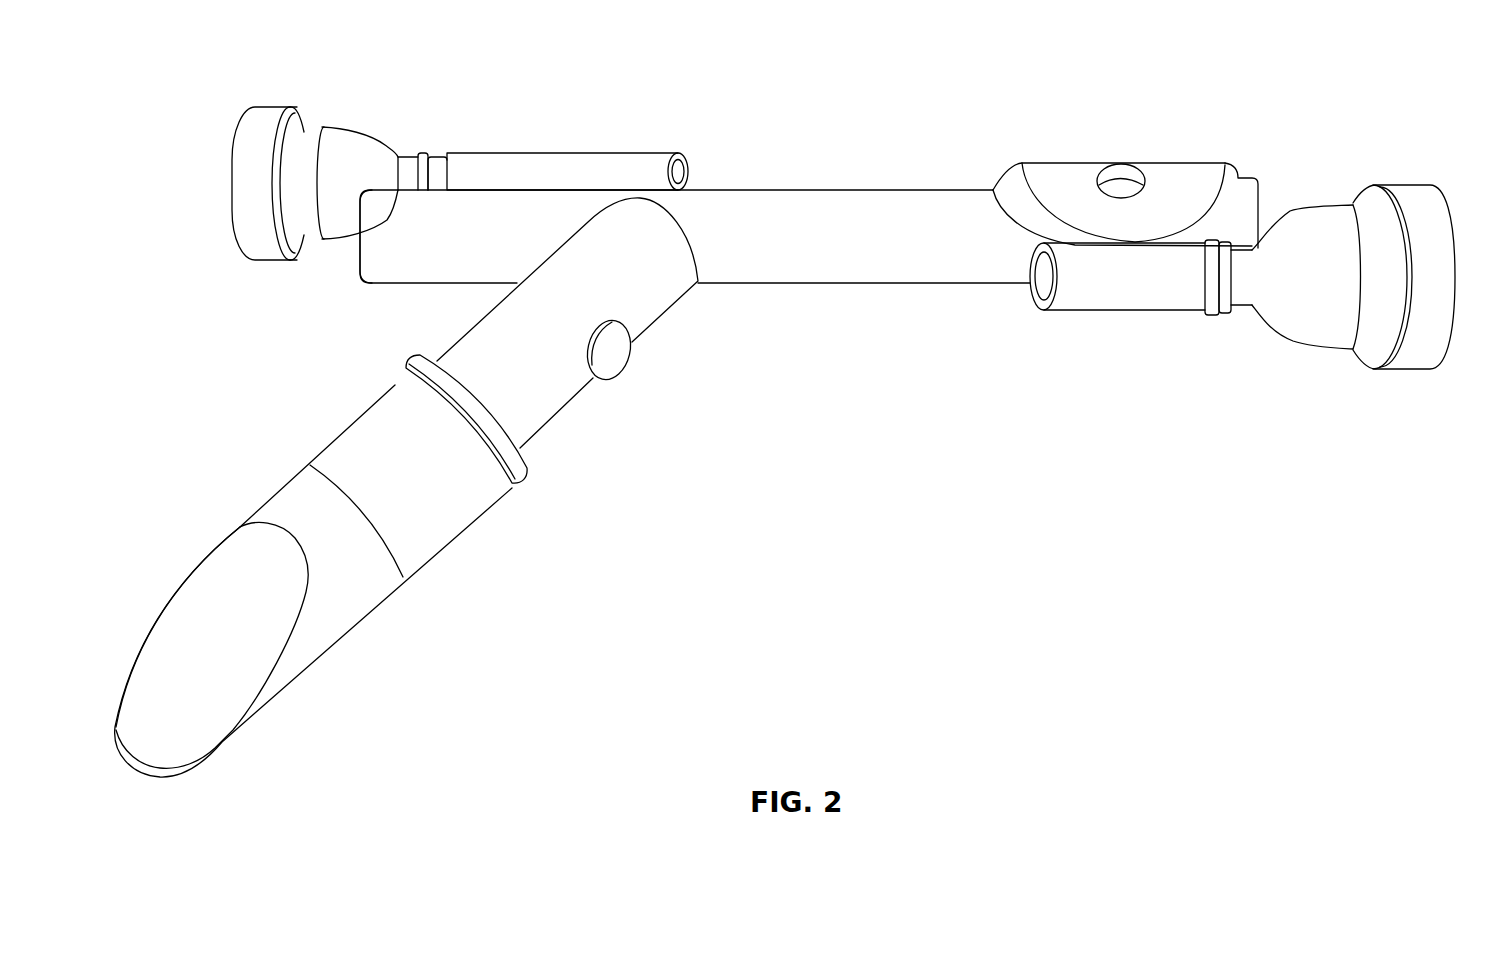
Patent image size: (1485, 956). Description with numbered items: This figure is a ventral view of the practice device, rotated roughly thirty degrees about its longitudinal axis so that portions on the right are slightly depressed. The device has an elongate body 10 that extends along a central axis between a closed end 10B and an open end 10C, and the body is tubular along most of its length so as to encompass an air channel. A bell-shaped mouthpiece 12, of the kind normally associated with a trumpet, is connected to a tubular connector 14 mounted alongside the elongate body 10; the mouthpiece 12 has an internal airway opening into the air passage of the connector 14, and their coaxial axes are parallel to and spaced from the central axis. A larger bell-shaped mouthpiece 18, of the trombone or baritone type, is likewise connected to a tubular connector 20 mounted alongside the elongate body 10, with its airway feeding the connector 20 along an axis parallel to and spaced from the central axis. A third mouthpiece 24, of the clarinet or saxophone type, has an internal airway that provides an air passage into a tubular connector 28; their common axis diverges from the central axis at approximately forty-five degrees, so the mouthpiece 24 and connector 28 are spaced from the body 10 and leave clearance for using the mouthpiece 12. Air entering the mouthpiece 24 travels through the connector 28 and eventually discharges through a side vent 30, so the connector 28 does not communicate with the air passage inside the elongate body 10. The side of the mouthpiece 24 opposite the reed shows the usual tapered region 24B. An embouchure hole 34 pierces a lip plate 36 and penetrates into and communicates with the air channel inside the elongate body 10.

The elongate body 10 is at (818, 190).
The closed end 10B is at (1262, 185).
The open end 10C is at (359, 268).
The bell-shaped mouthpiece 12 is at (334, 126).
The tubular connector 14 is at (579, 152).
The bell-shaped mouthpiece 18 is at (1311, 207).
The tubular connector 20 is at (1108, 312).
The third mouthpiece 24 is at (366, 615).
The tapered region 24B is at (288, 645).
The tubular connector 28 is at (544, 426).
The side vent 30 is at (633, 334).
The embouchure hole 34 is at (1149, 168).
The lip plate 36 is at (1044, 160).